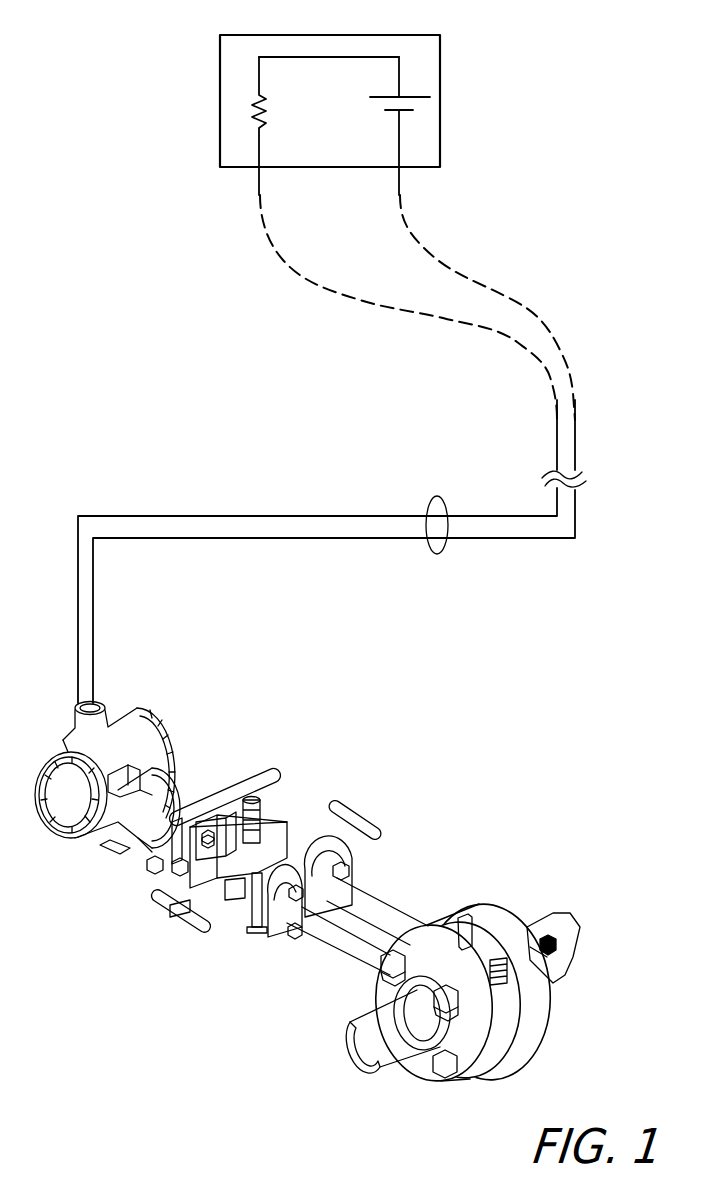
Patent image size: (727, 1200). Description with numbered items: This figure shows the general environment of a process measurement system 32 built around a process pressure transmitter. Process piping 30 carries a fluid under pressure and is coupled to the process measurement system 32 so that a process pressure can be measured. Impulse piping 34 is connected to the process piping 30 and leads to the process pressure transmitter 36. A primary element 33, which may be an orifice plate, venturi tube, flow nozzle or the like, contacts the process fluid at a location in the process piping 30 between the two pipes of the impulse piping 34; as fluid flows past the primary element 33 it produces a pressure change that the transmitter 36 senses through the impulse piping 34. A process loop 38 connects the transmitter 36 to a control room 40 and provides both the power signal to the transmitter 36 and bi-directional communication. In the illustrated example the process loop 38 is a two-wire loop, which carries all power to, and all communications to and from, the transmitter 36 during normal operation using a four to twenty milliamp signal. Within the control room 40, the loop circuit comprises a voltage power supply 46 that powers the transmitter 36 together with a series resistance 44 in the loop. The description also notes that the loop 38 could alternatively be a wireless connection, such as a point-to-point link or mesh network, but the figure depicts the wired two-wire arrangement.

The process piping 30 is at (566, 972).
The process measurement system 32 is at (418, 820).
The primary element 33 is at (512, 1042).
The impulse piping 34 is at (350, 938).
The process pressure transmitter 36 is at (163, 712).
The process loop 38 is at (437, 554).
The control room 40 is at (214, 103).
The series resistance 44 is at (258, 96).
The voltage power supply 46 is at (415, 92).